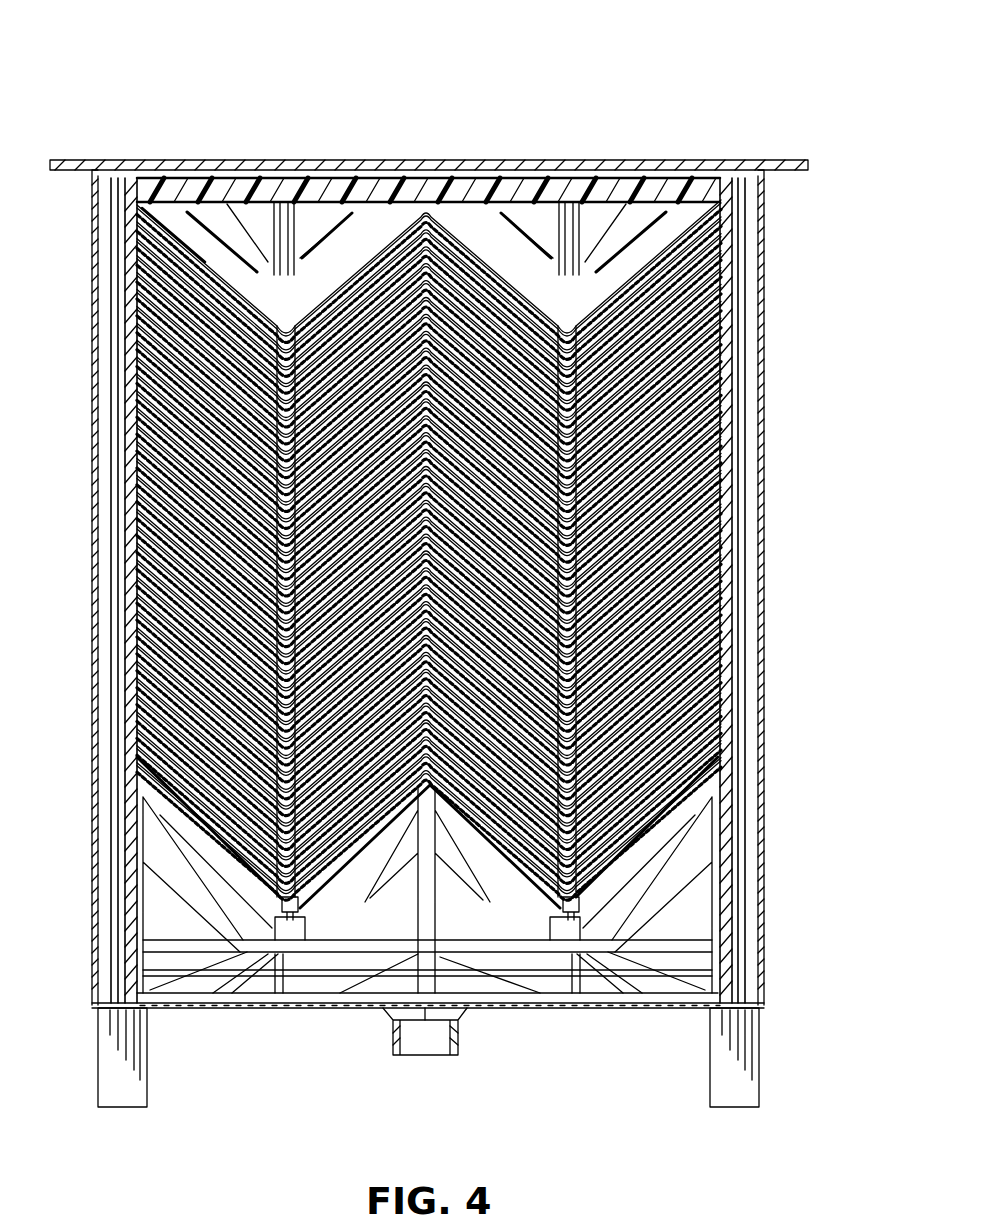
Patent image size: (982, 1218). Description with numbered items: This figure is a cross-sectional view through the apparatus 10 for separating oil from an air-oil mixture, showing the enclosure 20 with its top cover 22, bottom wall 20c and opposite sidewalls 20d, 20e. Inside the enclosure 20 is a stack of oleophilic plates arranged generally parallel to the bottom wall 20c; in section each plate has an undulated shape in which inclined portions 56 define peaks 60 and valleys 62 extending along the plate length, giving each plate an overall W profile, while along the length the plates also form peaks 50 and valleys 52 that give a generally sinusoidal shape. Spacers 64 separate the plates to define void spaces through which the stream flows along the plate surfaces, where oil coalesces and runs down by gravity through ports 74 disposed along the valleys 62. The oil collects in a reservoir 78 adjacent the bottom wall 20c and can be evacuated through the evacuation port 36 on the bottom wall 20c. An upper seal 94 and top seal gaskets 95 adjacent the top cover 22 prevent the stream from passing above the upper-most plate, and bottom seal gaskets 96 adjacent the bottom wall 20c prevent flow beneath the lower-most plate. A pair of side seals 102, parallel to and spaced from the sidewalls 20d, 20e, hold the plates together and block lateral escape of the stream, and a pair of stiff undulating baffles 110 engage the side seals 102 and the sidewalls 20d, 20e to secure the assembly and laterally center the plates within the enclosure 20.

The apparatus 10 is at (72, 50).
The enclosure 20 is at (97, 598).
The bottom wall 20c is at (183, 1008).
The sidewall 20d is at (92, 386).
The sidewall 20e is at (766, 390).
The top cover 22 is at (74, 160).
The evacuation port 36 is at (426, 1047).
The peaks 50 is at (286, 328).
The valleys 52 is at (300, 300).
The inclined portions 56 is at (193, 257).
The peaks 60 is at (149, 210).
The valleys 62 is at (282, 295).
The spacers 64 is at (292, 918).
The ports 74 is at (268, 954).
The reservoir 78 is at (440, 1003).
The upper seal 94 is at (735, 190).
The top seal gaskets 95 is at (190, 231).
The bottom seal gaskets 96 is at (345, 905).
The side seals 102 is at (128, 282).
The undulating baffles 110 is at (100, 320).